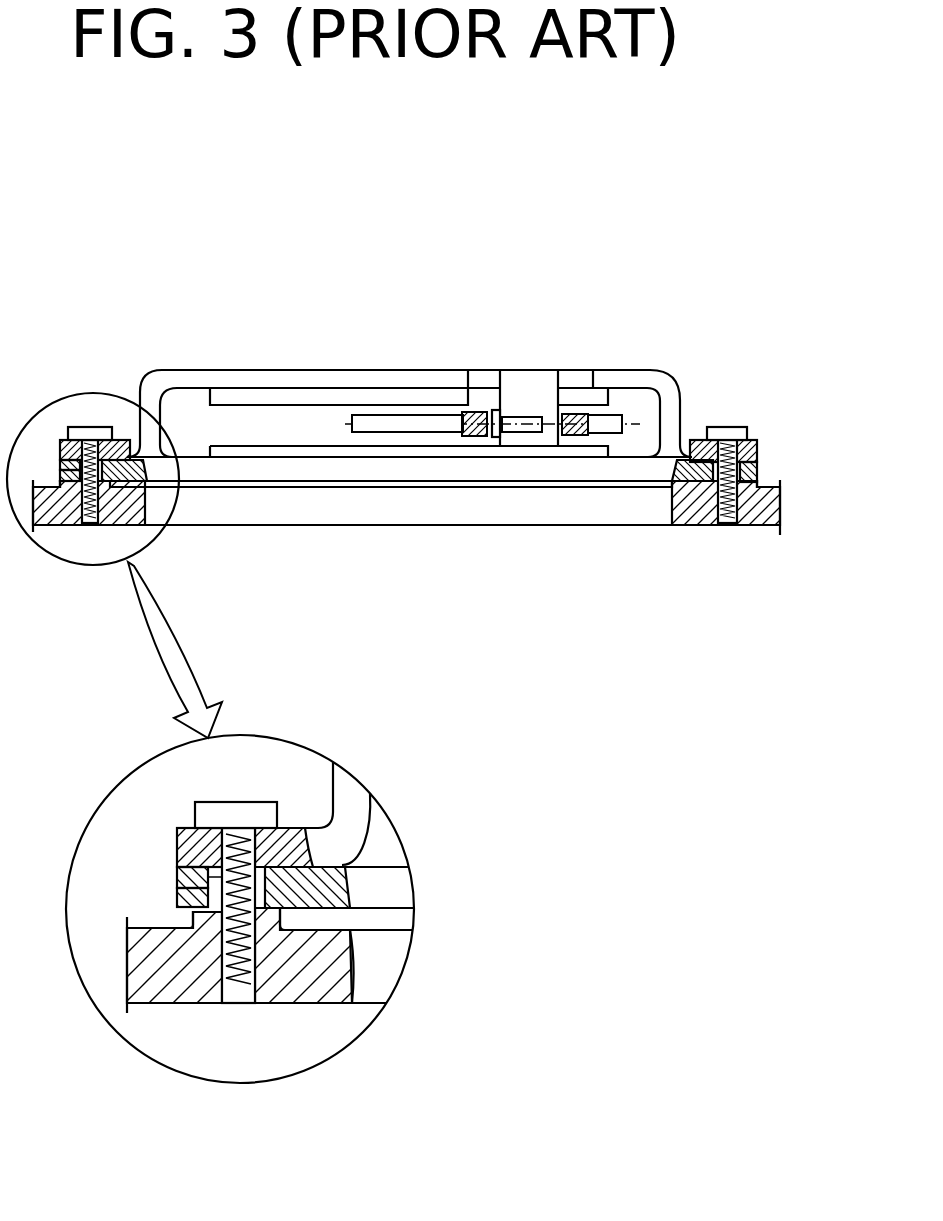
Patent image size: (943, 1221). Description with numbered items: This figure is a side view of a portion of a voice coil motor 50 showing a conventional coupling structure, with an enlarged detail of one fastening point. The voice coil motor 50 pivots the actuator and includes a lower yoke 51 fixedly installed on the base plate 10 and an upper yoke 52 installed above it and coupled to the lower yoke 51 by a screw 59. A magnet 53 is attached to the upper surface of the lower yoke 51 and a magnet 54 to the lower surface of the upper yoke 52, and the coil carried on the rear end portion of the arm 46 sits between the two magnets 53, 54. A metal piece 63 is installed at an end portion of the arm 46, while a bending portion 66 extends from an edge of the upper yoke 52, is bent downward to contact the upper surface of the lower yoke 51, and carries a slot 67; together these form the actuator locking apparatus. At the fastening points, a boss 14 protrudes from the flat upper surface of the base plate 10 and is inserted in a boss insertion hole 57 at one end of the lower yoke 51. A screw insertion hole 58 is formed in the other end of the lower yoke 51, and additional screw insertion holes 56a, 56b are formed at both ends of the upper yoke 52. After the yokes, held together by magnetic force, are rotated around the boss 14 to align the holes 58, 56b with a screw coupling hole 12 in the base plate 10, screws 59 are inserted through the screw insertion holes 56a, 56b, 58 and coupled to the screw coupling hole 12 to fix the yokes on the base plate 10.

The base plate 10 is at (503, 510).
The screw coupling hole 12 is at (727, 525).
The boss 14 is at (178, 896).
The arm 46 is at (372, 432).
The voice coil motor 50 is at (140, 360).
The lower yoke 51 is at (213, 470).
The upper yoke 52 is at (187, 372).
The magnet 53 is at (287, 450).
The magnet 54 is at (250, 403).
The screw insertion hole 56a is at (178, 848).
The screw insertion hole 56b is at (757, 447).
The boss insertion hole 57 is at (178, 875).
The screw insertion hole 58 is at (757, 470).
The screw 59 is at (88, 427).
The metal piece 63 is at (489, 366).
The bending portion 66 is at (548, 382).
The slot 67 is at (524, 415).